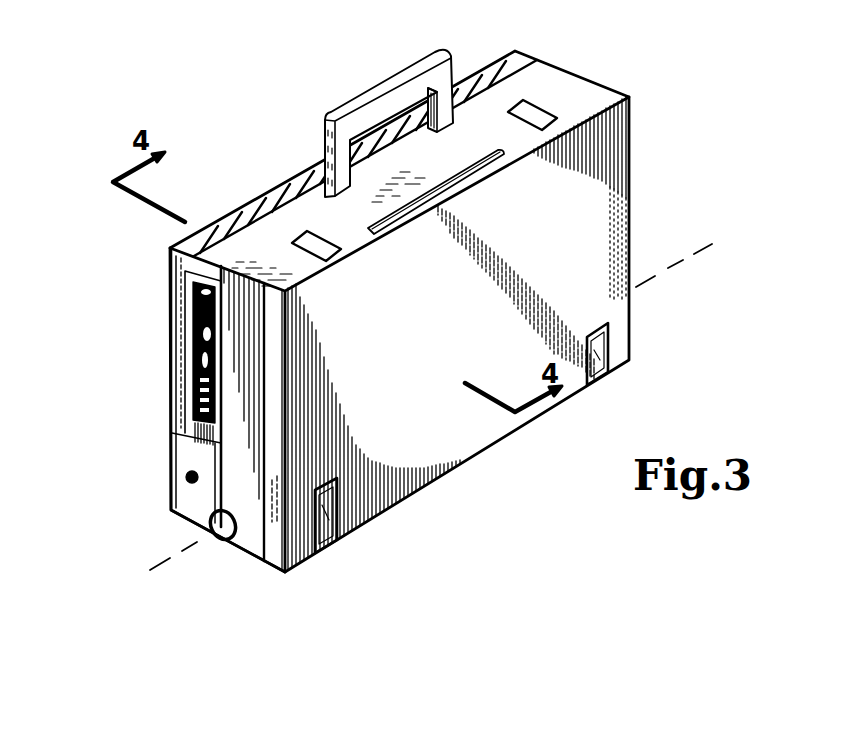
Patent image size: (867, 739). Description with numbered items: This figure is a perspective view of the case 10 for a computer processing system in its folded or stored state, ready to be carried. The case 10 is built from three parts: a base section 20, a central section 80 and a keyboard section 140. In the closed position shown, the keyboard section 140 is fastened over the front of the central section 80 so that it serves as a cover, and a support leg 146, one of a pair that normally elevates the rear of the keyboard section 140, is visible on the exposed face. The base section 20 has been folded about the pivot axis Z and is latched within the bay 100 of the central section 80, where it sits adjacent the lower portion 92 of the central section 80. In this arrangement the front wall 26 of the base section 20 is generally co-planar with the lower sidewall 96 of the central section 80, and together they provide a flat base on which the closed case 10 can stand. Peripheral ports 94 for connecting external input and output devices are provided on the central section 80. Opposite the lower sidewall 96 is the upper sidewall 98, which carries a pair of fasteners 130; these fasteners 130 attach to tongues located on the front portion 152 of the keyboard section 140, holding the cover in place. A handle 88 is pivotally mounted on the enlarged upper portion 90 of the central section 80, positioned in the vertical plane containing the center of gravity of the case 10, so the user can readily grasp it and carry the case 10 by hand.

The case 10 is at (688, 113).
The base section 20 is at (130, 409).
The front wall 26 is at (164, 484).
The central section 80 is at (246, 130).
The handle 88 is at (388, 84).
The enlarged upper portion 90 is at (177, 300).
The lower portion 92 is at (220, 538).
The peripheral ports 94 is at (196, 345).
The lower sidewall 96 is at (247, 490).
The upper sidewall 98 is at (502, 112).
The bay 100 is at (200, 457).
The fasteners 130 is at (307, 237).
The keyboard section 140 is at (462, 446).
The support leg 146 is at (600, 377).
The front portion 152 is at (463, 180).